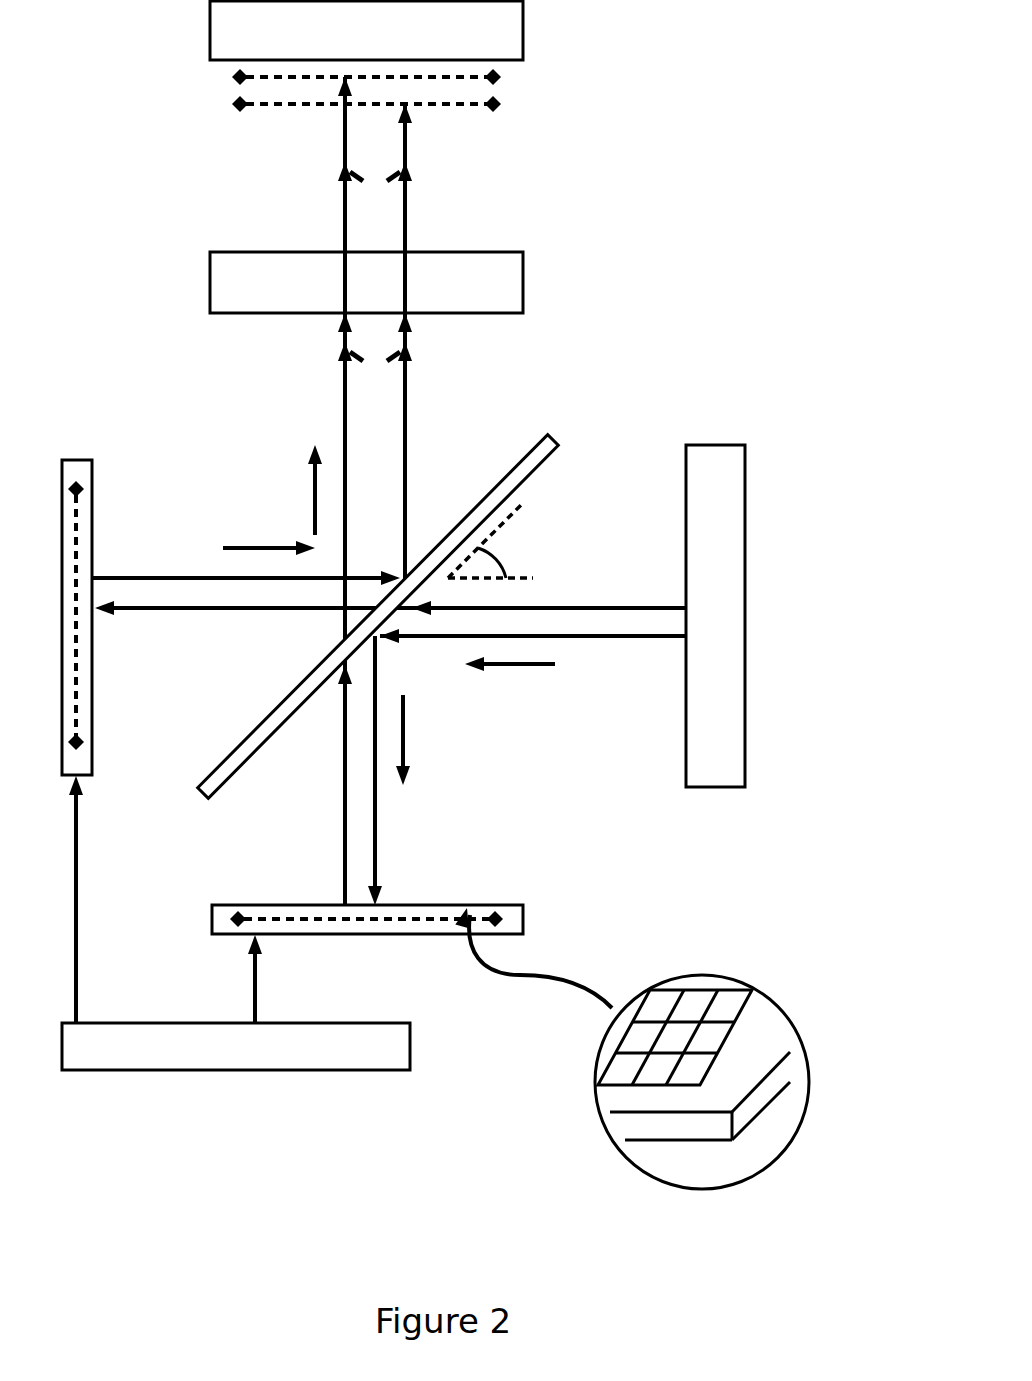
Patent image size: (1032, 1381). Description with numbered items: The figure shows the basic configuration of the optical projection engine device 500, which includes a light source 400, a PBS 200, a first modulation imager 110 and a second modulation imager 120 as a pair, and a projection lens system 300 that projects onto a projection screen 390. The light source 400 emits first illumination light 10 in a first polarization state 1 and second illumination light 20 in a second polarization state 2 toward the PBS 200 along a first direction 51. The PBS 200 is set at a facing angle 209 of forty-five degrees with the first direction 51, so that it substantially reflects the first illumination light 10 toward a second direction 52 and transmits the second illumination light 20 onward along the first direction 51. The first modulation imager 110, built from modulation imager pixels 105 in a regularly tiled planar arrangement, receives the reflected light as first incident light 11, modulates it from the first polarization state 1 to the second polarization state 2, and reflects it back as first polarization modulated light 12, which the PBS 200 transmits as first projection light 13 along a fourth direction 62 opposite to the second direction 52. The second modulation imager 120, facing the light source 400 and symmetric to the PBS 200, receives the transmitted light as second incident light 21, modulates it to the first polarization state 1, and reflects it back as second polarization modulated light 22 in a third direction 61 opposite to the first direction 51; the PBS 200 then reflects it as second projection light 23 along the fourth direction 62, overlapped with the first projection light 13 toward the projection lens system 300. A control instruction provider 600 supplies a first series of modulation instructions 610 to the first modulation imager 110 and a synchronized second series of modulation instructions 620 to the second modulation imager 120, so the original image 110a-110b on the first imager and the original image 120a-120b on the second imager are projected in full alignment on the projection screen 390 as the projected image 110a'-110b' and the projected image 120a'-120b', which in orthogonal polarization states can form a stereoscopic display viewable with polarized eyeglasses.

The optical projection engine device 500 is at (683, 360).
The projection screen 390 is at (523, 30).
The projection lens system 300 is at (523, 283).
The light source 400 is at (720, 787).
The control instruction provider 600 is at (410, 1042).
The first series of modulation instructions 610 is at (257, 990).
The second series of modulation instructions 620 is at (78, 973).
The PBS 200 is at (205, 800).
The facing angle 209 is at (480, 548).
The second modulation imager 120 is at (85, 460).
The first edge of second original image 120a is at (129, 765).
The second edge of second original image 120b is at (134, 575).
The first modulation imager 110 is at (447, 905).
The first edge of first original image 110a is at (302, 911).
The second edge of first original image 110b is at (554, 905).
The first edge of first projected image 110a' is at (315, 100).
The second edge of first projected image 110b' is at (555, 100).
The first edge of second projected image 120a' is at (336, 146).
The second edge of second projected image 120b' is at (536, 141).
The modulation imager pixels 105 is at (722, 990).
The first illumination light 10 is at (607, 640).
The first polarization state 1 is at (415, 350).
The second polarization state 2 is at (335, 355).
The first incident light 11 is at (378, 840).
The first polarization modulated light 12 is at (342, 800).
The first projection light 13 is at (343, 415).
The second illumination light 20 is at (620, 605).
The second incident light 21 is at (245, 612).
The second polarization modulated light 22 is at (205, 578).
The second projection light 23 is at (405, 450).
The first direction 51 is at (515, 668).
The second direction 52 is at (405, 745).
The third direction 61 is at (247, 547).
The fourth direction 62 is at (312, 455).